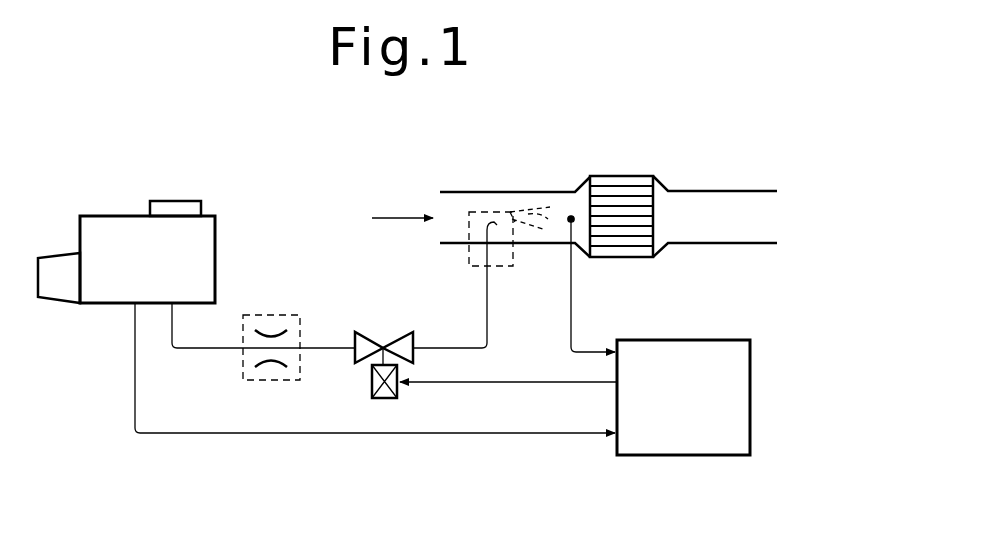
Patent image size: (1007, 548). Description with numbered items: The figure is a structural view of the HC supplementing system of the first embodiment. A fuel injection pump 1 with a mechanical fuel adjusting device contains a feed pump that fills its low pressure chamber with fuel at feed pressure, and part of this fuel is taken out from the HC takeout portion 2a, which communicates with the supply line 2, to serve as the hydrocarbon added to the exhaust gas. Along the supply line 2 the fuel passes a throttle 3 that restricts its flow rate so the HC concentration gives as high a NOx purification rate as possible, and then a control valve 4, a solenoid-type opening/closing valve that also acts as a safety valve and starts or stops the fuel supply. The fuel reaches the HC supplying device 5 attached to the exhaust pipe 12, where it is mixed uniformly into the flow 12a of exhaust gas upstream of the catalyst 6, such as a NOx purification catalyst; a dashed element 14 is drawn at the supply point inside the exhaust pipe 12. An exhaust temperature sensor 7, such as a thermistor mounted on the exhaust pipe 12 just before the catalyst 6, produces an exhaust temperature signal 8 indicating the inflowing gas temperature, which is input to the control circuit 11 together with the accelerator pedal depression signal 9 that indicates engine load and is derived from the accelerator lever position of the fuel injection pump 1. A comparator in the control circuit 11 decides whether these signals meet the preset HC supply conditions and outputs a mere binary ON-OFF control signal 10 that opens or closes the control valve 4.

The fuel injection pump 1 is at (112, 225).
The supply line 2 is at (220, 348).
The HC takeout portion 2a is at (170, 305).
The throttle 3 is at (263, 315).
The control valve 4 is at (398, 337).
The HC supplying device 5 is at (493, 210).
The catalyst 6 is at (637, 182).
The exhaust temperature sensor 7 is at (571, 219).
The exhaust temperature signal 8 is at (573, 300).
The accelerator pedal depression signal 9 is at (133, 393).
The binary control signal 10 is at (498, 383).
The control circuit 11 is at (710, 340).
The exhaust pipe 12 is at (452, 198).
The flow of the exhaust gas 12a is at (402, 202).
The air injection nozzle 14 is at (548, 210).